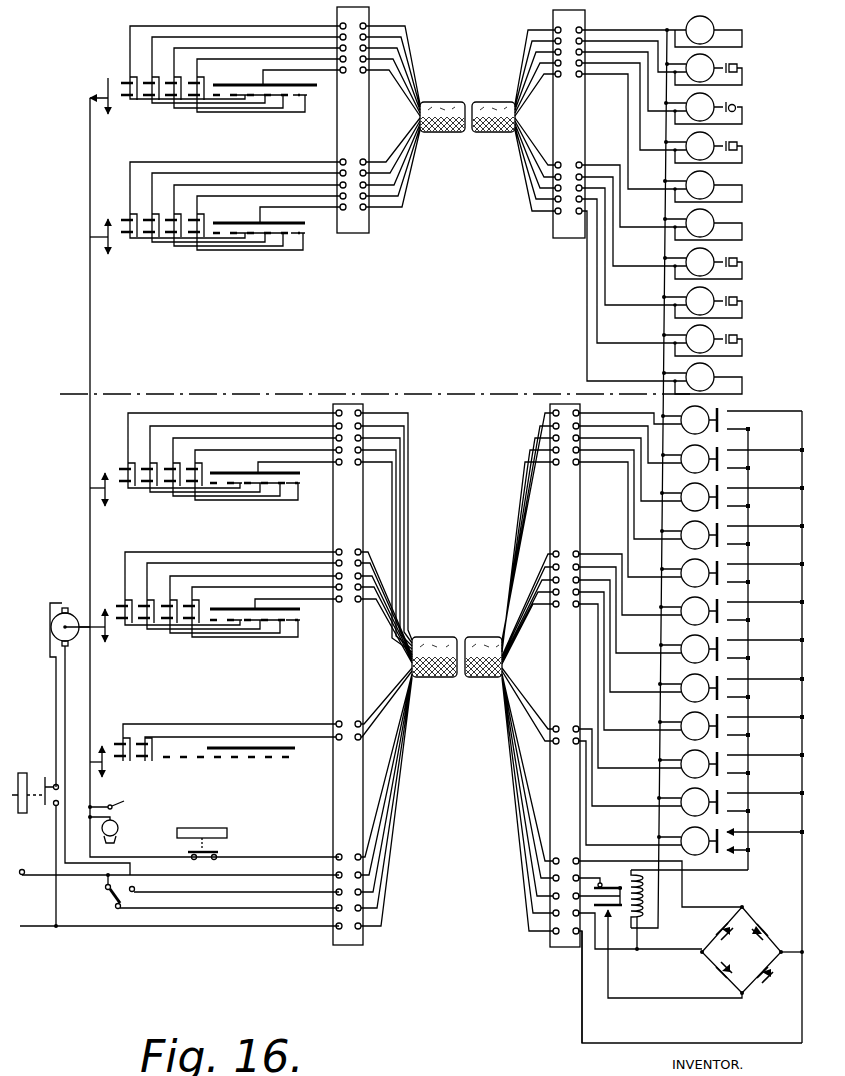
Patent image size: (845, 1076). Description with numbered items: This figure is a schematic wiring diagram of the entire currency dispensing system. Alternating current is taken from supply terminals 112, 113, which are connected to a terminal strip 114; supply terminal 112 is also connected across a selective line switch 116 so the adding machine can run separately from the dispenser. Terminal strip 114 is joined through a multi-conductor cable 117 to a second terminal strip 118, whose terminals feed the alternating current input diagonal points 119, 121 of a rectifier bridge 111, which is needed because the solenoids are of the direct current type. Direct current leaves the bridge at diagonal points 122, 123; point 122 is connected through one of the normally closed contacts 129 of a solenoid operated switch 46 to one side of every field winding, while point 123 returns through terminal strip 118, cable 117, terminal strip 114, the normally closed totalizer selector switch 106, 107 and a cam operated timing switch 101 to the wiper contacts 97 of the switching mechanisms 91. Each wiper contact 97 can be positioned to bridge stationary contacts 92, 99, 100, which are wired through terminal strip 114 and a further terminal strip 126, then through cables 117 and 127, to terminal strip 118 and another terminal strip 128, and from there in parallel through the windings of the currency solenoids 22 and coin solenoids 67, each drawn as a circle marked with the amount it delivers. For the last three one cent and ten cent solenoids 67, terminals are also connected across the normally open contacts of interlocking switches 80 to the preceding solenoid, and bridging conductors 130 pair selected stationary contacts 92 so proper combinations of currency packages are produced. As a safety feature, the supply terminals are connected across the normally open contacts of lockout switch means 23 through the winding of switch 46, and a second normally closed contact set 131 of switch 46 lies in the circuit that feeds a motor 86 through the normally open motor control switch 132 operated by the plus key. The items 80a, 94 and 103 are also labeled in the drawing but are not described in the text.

The switching mechanism 91 is at (100, 56).
The wiper contact 97 is at (106, 90).
The stationary contact 99 is at (200, 86).
The stationary contact 100 is at (287, 85).
The stationary contact 92 is at (312, 99).
The bridging conductor 130 is at (246, 112).
The terminal strip 126 is at (337, 14).
The multi-conductor cable 127 is at (455, 102).
The terminal strip 128 is at (585, 18).
The solenoid 67 is at (714, 30).
The interlocking switch 80 is at (738, 142).
The relay contact 80a is at (738, 104).
The terminal strip 114 is at (350, 404).
The second terminal strip 118 is at (565, 404).
The multi-conductor cable 117 is at (445, 677).
The solenoid 22 is at (702, 407).
The lockout switch means 23 is at (736, 414).
The motor 86 is at (56, 612).
The motor lead 94 is at (82, 624).
The motor control switch 132 is at (50, 782).
The cam operated timing switch 101 is at (125, 805).
The signal lamp 103 is at (119, 830).
The totalizer selector switch 106 is at (222, 840).
The totalizer selector switch contacts 107 is at (216, 858).
The supply terminal 112 is at (22, 876).
The supply terminal 113 is at (22, 928).
The selective line switch 116 is at (110, 905).
The normally closed contacts 131 is at (600, 880).
The normally closed contacts 129 is at (582, 936).
The solenoid operated switch 46 is at (631, 912).
The diagonal point 123 is at (742, 907).
The rectifier bridge 111 is at (764, 924).
The diagonal point 119 is at (702, 956).
The diagonal point 121 is at (780, 958).
The diagonal point 122 is at (742, 996).